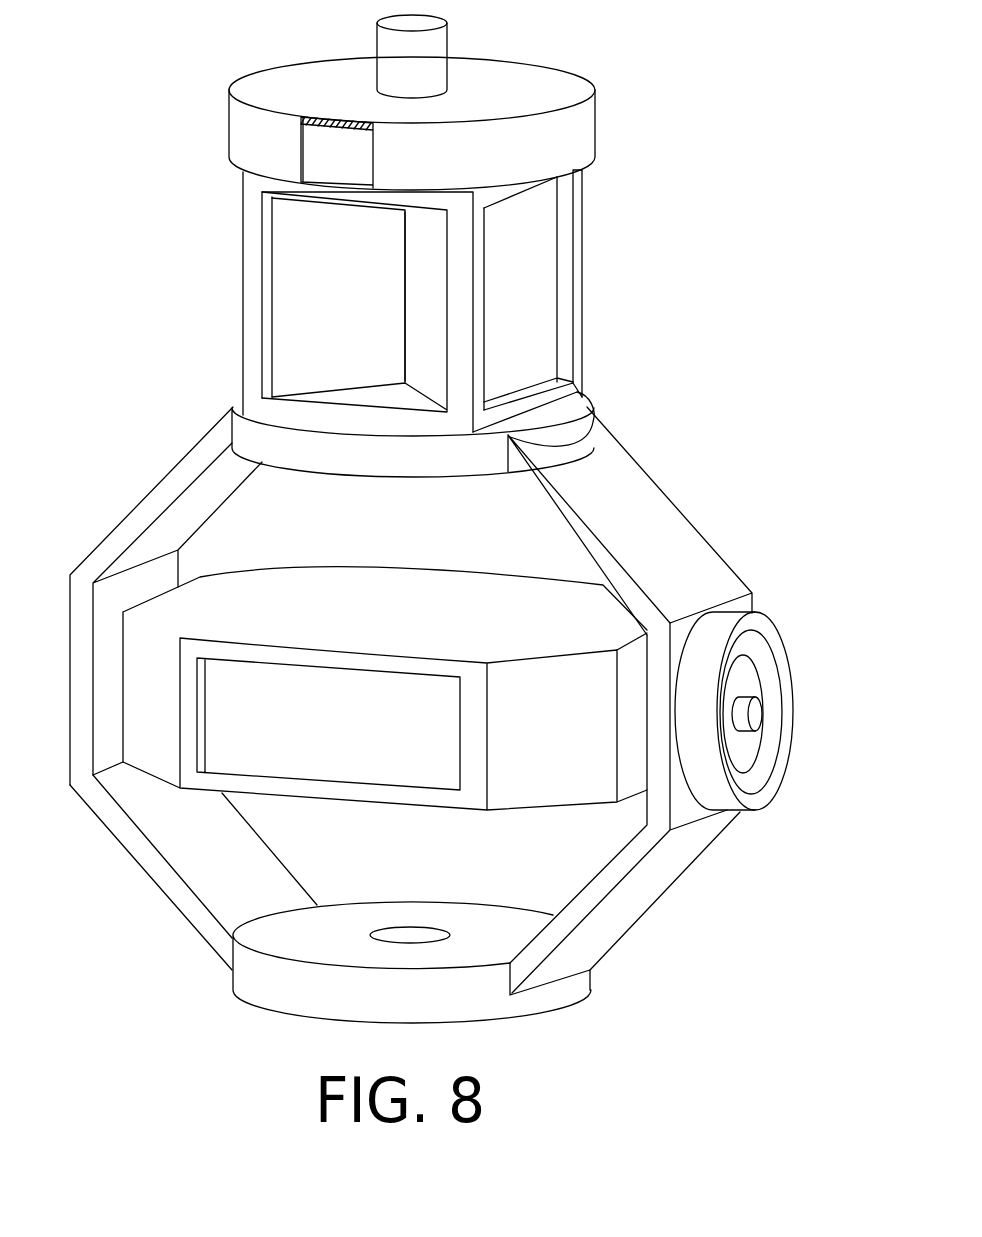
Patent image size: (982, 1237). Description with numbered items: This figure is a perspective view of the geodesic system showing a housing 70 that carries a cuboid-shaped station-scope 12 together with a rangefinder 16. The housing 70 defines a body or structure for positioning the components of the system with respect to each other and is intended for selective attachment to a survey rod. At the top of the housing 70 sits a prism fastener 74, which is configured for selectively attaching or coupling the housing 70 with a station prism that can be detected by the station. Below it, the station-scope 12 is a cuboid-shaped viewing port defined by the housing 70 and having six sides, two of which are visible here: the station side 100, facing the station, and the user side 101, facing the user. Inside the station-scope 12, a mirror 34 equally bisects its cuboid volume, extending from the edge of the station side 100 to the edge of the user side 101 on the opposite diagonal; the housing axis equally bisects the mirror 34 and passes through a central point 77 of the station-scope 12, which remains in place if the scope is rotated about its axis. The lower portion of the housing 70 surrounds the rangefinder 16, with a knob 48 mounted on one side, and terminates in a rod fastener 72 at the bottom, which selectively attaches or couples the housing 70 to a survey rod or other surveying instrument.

The prism fastener 74 is at (412, 56).
The station-scope 12 is at (250, 183).
The mirror 34 is at (417, 294).
The central point 77 is at (407, 294).
The station side 100 is at (585, 235).
The user side 101 is at (291, 376).
The housing 70 is at (411, 700).
The rangefinder 16 is at (385, 688).
The knob 48 is at (762, 623).
The rod fastener 72 is at (408, 933).